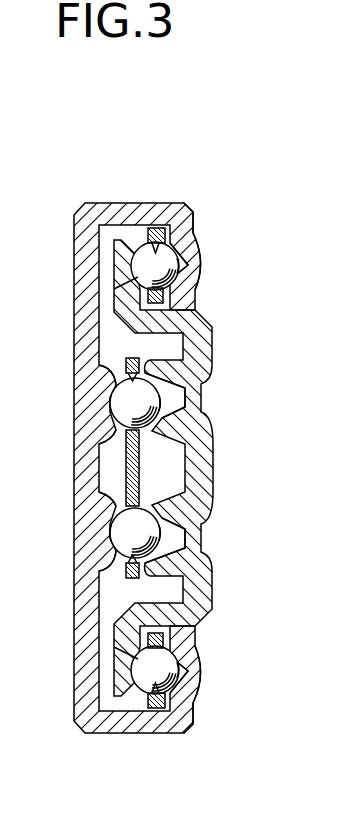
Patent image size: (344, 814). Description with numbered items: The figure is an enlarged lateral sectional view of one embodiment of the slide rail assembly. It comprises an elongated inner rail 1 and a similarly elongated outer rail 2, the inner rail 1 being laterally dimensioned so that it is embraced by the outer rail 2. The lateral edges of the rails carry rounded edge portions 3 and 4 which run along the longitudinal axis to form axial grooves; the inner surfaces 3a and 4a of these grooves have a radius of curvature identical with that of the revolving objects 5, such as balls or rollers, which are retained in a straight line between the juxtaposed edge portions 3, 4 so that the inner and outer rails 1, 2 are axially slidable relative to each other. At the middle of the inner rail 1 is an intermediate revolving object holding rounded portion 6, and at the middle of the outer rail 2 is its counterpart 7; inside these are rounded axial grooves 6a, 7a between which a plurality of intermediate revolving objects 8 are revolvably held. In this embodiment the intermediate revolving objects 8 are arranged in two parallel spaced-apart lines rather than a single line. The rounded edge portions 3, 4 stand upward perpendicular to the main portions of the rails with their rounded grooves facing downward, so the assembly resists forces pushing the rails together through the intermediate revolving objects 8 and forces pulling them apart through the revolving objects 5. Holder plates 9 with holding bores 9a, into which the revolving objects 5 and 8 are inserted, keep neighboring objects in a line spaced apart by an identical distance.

The inner rail 1 is at (214, 463).
The outer rail 2 is at (73, 446).
The rounded edge portion 3 is at (118, 255).
The inner surface of groove 3a is at (138, 268).
The rounded edge portion 4 is at (190, 265).
The inner surface of groove 4a is at (178, 273).
The revolving object 5 is at (195, 235).
The intermediate revolving object holding rounded portion 6 is at (175, 402).
The rounded axial groove 6a is at (164, 410).
The intermediate revolving object holding rounded portion 7 is at (98, 392).
The rounded axial groove 7a is at (116, 401).
The intermediate revolving object 8 is at (122, 412).
The holder plate 9 is at (158, 230).
The holding bore 9a is at (153, 245).